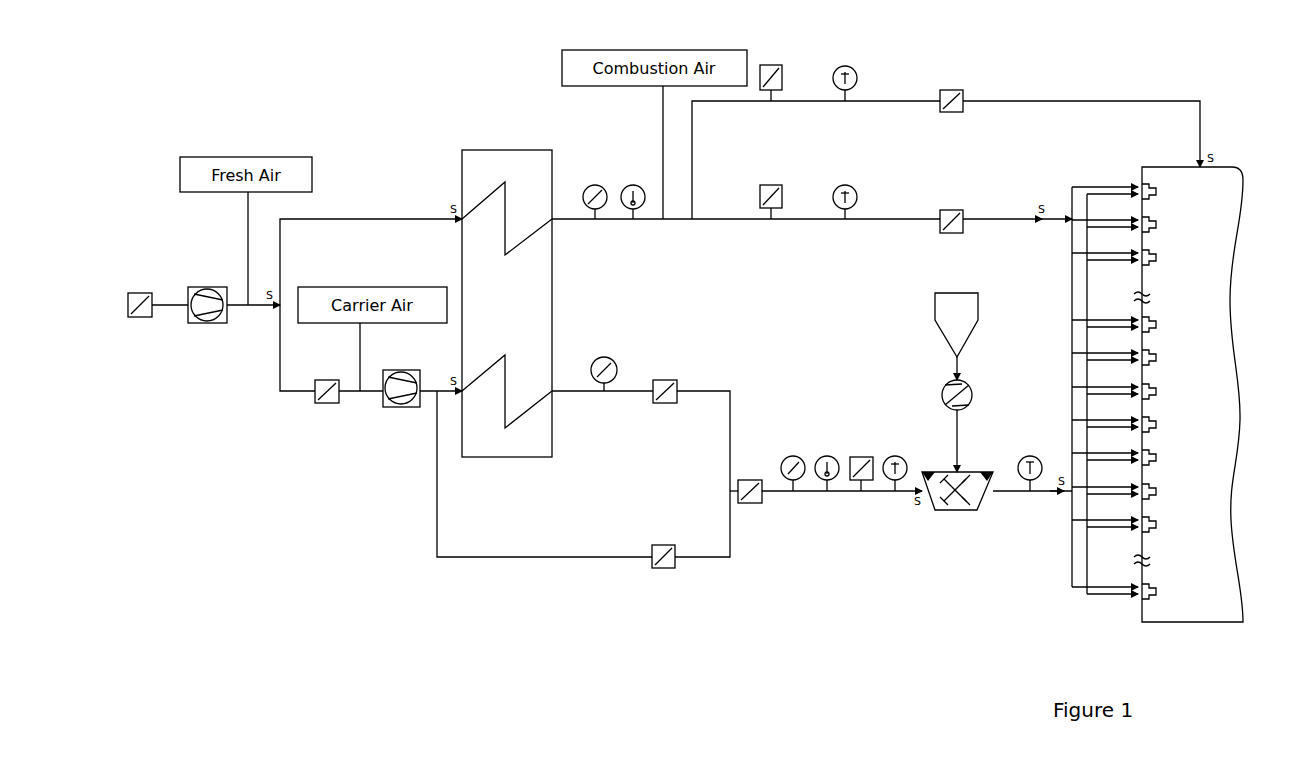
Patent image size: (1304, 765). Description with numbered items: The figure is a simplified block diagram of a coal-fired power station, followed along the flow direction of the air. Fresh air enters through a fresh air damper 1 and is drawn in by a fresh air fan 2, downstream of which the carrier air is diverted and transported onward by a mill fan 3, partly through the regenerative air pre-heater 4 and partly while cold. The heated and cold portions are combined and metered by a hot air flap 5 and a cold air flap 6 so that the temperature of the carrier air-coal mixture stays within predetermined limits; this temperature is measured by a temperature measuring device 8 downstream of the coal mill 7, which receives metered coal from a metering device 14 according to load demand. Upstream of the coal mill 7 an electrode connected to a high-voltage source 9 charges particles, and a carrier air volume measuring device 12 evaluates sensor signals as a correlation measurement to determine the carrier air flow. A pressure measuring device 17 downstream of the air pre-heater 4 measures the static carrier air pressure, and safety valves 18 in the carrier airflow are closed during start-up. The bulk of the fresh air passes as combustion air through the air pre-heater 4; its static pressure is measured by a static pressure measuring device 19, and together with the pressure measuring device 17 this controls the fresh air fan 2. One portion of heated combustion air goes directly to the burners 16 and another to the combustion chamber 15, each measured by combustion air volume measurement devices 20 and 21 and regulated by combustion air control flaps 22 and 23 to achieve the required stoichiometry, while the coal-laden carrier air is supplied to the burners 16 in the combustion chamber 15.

The fresh air damper 1 is at (133, 280).
The fresh air fan 2 is at (212, 325).
The mill fan 3 is at (405, 410).
The regenerative air pre-heater 4 is at (500, 163).
The hot air flap 5 is at (661, 386).
The cold air flap 6 is at (665, 566).
The coal mill 7 is at (955, 511).
The temperature measuring device 8 is at (1032, 462).
The high-voltage source 9 is at (778, 70).
The carrier air volume measuring device 12 is at (898, 462).
The metering device 14 is at (958, 394).
The combustion chamber 15 is at (1217, 188).
The burners 16 is at (1142, 184).
The pressure measuring device 17 is at (606, 365).
The safety valves 18 is at (330, 398).
The static pressure measuring device 19 is at (596, 190).
The combustion air volume measurement device 20 is at (850, 190).
The combustion air volume measurement device 21 is at (850, 70).
The combustion air control flap 22 is at (949, 213).
The combustion air control flap 23 is at (949, 92).